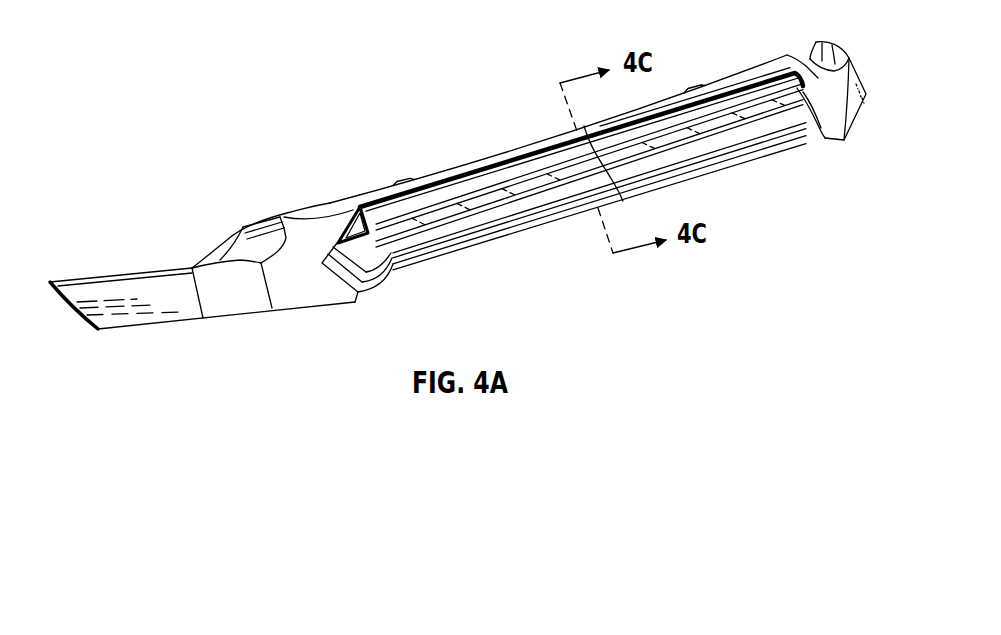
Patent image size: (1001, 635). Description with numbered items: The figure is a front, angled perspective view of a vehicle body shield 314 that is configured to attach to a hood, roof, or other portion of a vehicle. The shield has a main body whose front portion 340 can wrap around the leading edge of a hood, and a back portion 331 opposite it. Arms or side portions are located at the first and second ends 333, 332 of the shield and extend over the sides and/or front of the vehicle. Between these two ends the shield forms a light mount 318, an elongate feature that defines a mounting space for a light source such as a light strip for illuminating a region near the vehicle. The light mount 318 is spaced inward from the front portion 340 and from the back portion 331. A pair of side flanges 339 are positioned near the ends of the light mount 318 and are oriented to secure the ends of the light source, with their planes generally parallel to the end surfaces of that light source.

The vehicle body shield 314 is at (239, 138).
The light mount 318 is at (552, 148).
The back portion 331 is at (333, 203).
The second end 332 is at (851, 57).
The first end 333 is at (76, 324).
The side flanges 339 is at (362, 224).
The front portion 340 is at (465, 236).